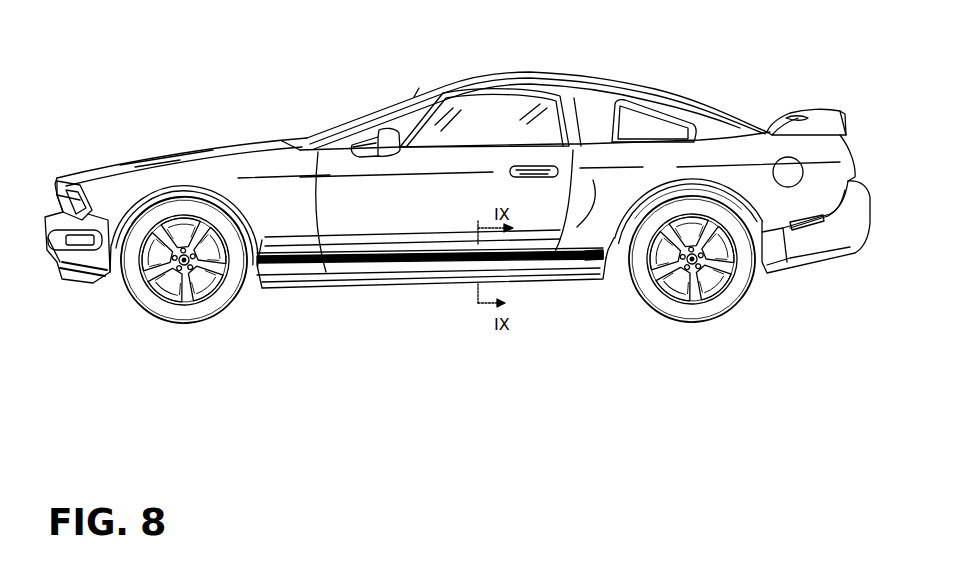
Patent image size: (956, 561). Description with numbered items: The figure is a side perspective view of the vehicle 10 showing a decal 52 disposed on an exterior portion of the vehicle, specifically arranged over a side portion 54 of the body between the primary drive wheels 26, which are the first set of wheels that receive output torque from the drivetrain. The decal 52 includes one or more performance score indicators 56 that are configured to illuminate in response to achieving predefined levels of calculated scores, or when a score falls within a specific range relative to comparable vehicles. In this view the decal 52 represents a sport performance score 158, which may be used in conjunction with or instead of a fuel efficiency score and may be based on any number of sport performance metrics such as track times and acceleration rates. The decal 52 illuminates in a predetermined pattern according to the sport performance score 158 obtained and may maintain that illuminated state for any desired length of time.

The vehicle 10 is at (395, 78).
The primary drive wheels 26 is at (196, 319).
The decal 52 is at (340, 275).
The side portion 54 is at (257, 203).
The performance score indicators 56 is at (477, 262).
The sport performance score 158 is at (590, 270).